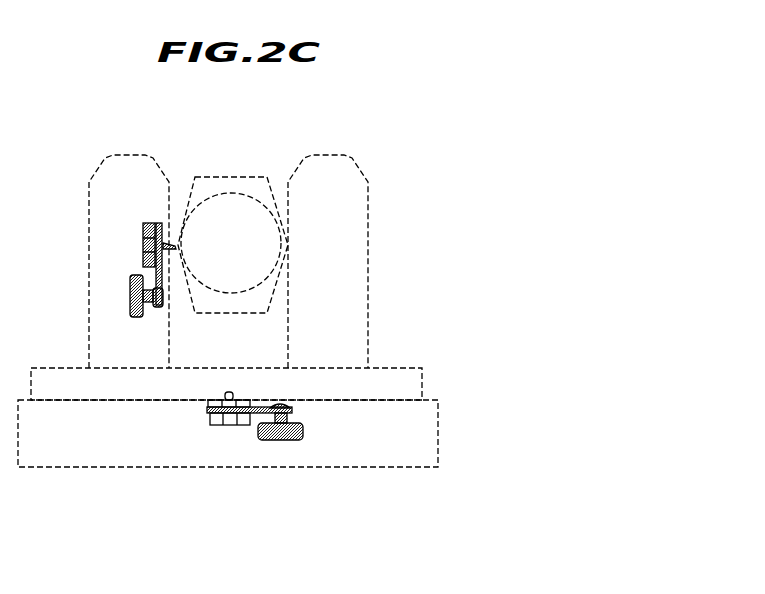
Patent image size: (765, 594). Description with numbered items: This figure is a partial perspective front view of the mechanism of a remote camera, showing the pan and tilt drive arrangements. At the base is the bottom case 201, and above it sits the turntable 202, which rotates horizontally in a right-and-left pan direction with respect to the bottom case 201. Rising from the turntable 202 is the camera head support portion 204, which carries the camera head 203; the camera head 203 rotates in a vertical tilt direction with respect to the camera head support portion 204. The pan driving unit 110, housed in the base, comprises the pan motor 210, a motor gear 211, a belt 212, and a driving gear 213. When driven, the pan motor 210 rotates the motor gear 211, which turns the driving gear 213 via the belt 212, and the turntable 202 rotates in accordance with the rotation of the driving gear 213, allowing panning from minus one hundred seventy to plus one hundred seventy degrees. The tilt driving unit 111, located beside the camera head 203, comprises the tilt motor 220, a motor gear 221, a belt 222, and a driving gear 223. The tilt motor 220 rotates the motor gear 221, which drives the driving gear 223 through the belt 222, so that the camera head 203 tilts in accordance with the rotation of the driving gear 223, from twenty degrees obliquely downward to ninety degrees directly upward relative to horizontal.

The pan driving unit 110 is at (353, 478).
The tilt driving unit 111 is at (117, 327).
The bottom case 201 is at (442, 435).
The turntable 202 is at (423, 377).
The camera head 203 is at (233, 177).
The camera head support portion 204 is at (128, 155).
The pan motor 210 is at (292, 440).
The motor gear 211 is at (285, 402).
The belt 212 is at (257, 413).
The driving gear 213 is at (222, 425).
The tilt motor 220 is at (130, 296).
The motor gear 221 is at (165, 292).
The belt 222 is at (143, 267).
The driving gear 223 is at (143, 245).